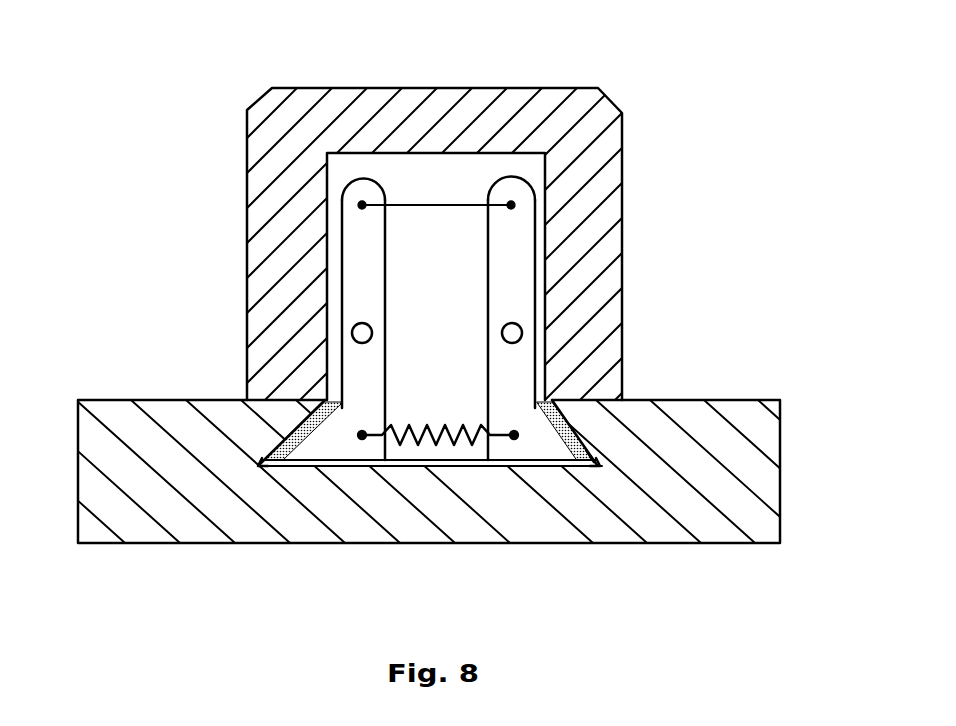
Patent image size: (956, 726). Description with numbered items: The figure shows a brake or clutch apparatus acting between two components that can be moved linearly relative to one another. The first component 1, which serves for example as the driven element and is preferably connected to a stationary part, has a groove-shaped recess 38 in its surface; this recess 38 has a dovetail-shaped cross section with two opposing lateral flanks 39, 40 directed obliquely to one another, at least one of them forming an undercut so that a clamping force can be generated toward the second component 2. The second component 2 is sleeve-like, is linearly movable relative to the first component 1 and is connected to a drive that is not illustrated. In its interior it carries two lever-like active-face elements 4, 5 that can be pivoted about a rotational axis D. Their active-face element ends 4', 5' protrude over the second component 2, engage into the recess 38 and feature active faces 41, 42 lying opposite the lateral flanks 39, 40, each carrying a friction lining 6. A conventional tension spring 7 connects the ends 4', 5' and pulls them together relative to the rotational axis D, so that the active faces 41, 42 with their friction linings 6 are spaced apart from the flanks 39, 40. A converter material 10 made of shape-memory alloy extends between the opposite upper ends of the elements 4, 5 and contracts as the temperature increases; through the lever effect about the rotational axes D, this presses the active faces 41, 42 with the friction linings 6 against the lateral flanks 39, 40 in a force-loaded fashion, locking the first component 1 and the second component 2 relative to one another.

The first component 1 is at (210, 520).
The second component 2 is at (525, 113).
The active-face element 4 is at (264, 330).
The active-face element end 4' is at (314, 497).
The active-face element 5 is at (615, 330).
The active-face element end 5' is at (531, 497).
The friction lining 6 is at (574, 424).
The tension spring 7 is at (432, 426).
The converter material 10 is at (443, 204).
The groove-shaped recess 38 is at (447, 467).
The lateral flank 39 is at (262, 470).
The lateral flank 40 is at (582, 473).
The active face 41 is at (300, 425).
The active face 42 is at (588, 447).
The rotational axis D is at (352, 332).